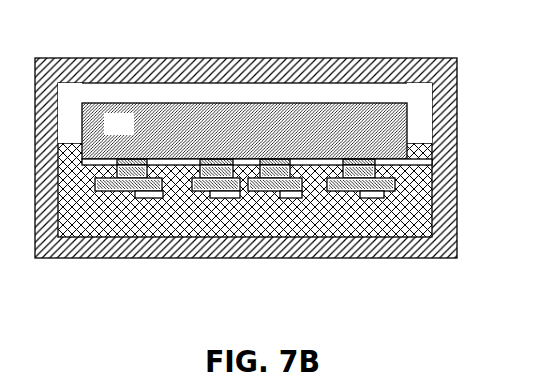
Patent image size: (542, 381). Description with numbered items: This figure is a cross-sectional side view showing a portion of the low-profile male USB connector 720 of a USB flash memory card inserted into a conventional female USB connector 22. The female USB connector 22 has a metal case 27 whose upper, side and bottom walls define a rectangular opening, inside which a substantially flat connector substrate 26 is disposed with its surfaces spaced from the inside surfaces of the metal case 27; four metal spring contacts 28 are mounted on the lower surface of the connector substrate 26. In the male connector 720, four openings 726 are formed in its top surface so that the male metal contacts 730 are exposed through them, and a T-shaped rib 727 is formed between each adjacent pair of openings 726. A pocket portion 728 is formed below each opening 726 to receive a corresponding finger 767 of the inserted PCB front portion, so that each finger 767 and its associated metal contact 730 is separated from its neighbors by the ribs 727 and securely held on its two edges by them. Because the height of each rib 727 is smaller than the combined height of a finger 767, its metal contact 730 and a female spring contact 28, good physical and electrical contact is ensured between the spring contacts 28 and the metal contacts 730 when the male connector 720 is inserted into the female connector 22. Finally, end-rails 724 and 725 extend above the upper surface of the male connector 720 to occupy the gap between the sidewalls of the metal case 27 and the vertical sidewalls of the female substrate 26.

The female USB connector 22 is at (271, 168).
The metal case 27 is at (273, 57).
The end-rail 724 is at (74, 142).
The end-rail 725 is at (422, 142).
The openings 726 is at (365, 162).
The connector substrate 26 is at (130, 134).
The metal spring contacts 28 is at (432, 162).
The metal contacts 730 is at (413, 178).
The male slim USB connector 720 is at (108, 226).
The finger 767 is at (128, 179).
The T-shaped rib 727 is at (172, 190).
The pocket portion 728 is at (142, 198).